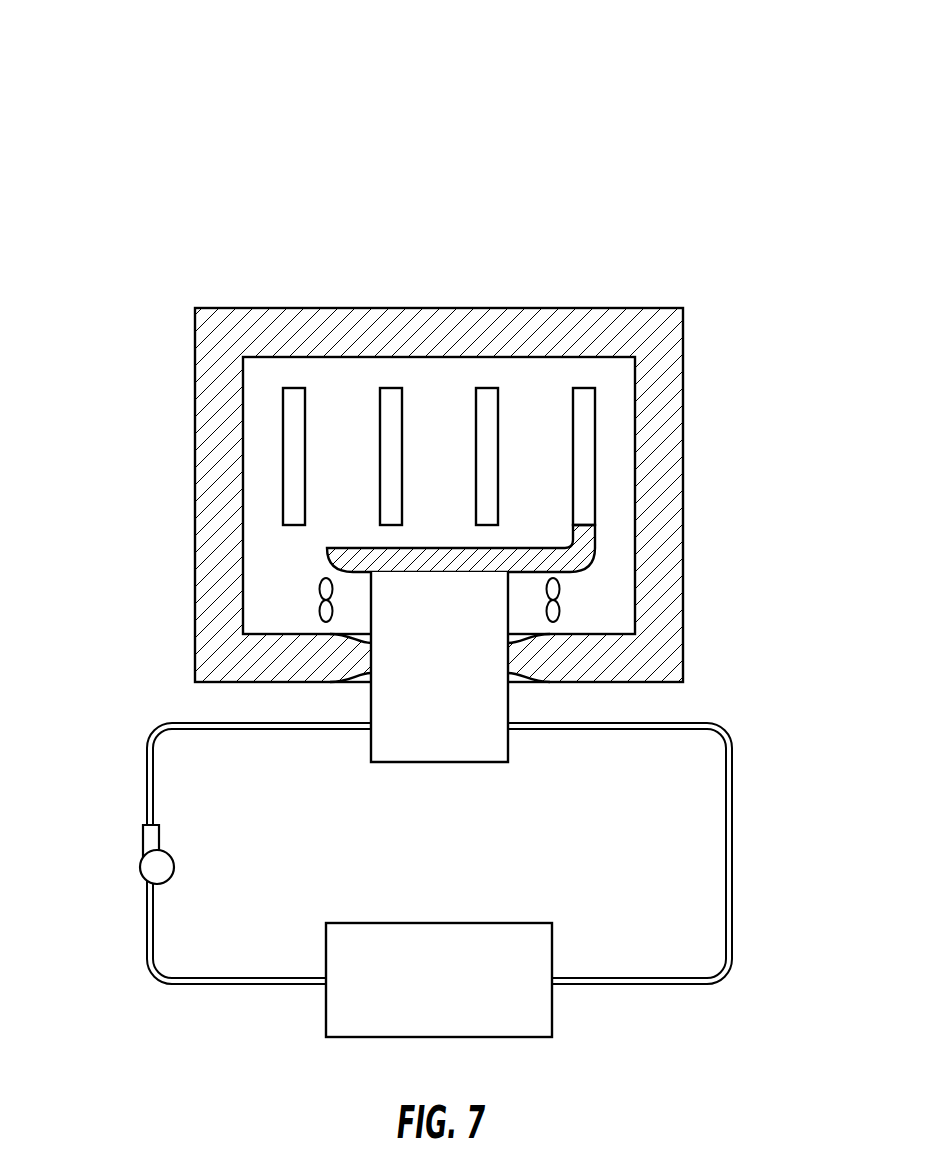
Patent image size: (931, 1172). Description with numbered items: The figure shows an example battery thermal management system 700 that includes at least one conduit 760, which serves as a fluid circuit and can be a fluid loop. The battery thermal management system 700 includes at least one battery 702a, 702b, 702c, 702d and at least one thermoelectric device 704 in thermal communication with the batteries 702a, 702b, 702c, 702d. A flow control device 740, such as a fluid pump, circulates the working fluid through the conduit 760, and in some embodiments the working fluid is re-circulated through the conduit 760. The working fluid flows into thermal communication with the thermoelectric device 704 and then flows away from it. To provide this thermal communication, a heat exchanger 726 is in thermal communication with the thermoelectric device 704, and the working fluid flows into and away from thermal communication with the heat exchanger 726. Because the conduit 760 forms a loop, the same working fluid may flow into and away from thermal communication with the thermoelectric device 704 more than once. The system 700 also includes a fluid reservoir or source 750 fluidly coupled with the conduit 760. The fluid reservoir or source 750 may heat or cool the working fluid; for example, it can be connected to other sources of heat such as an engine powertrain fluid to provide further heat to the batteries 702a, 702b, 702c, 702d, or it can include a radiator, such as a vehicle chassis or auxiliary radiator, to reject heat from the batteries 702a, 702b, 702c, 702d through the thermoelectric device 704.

The battery thermal management system 700 is at (693, 135).
The battery 702a is at (295, 411).
The battery 702b is at (391, 411).
The battery 702c is at (487, 411).
The battery 702d is at (583, 411).
The thermoelectric device 704 is at (500, 659).
The heat exchanger 726 is at (430, 745).
The flow control device 740 is at (148, 867).
The fluid reservoir or source 750 is at (526, 1013).
The conduit 760 is at (725, 872).